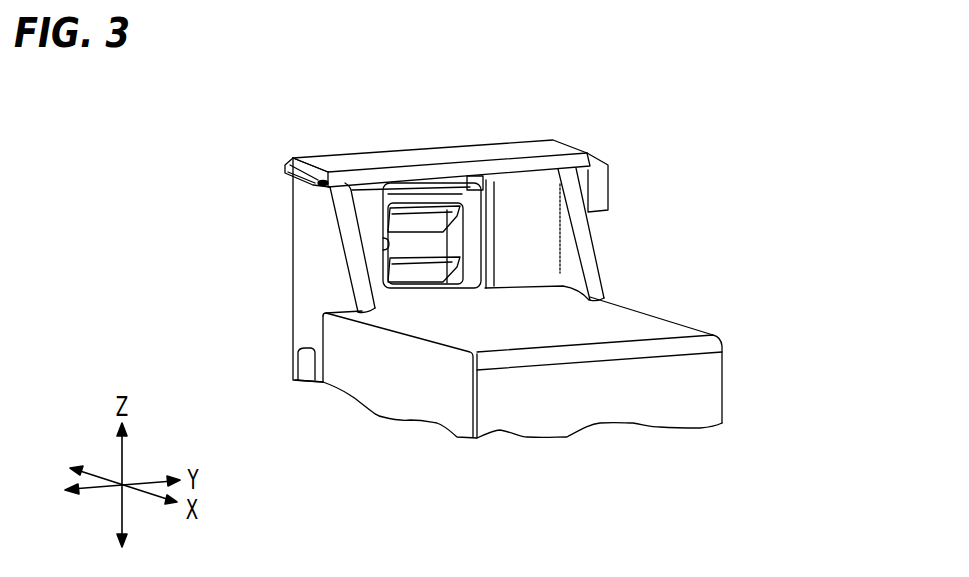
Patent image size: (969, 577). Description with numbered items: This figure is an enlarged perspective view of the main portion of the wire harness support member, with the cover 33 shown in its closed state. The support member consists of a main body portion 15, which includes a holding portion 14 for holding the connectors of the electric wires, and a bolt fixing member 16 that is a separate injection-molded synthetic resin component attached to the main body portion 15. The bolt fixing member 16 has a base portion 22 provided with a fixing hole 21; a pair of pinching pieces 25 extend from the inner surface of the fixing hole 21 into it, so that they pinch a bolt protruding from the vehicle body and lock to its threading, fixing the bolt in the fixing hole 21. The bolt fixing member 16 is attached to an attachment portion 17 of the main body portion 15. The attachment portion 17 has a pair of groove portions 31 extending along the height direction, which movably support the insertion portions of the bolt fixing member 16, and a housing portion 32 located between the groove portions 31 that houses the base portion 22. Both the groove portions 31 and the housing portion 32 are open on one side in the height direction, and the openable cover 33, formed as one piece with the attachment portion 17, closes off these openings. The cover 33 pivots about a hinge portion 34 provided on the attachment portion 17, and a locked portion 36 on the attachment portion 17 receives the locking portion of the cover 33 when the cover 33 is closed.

The cover 33 is at (367, 155).
The base portion 22 is at (403, 187).
The bolt fixing member 16 is at (440, 198).
The groove portion 31 is at (480, 178).
The attachment portion 17 is at (523, 180).
The hinge portion 34 is at (285, 175).
The housing portion 32 is at (387, 248).
The pinching piece 25 is at (440, 213).
The fixing hole 21 is at (455, 250).
The locked portion 36 is at (608, 185).
The holding portion 14 is at (630, 308).
The main body portion 15 is at (723, 378).